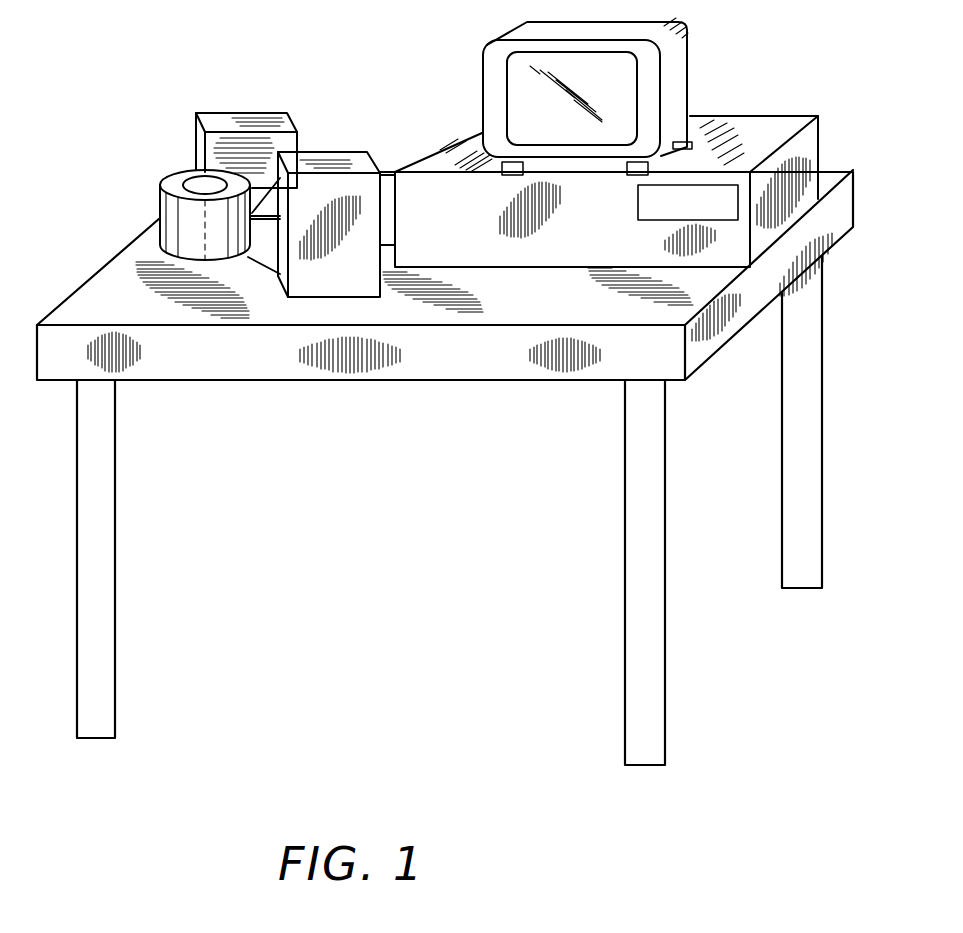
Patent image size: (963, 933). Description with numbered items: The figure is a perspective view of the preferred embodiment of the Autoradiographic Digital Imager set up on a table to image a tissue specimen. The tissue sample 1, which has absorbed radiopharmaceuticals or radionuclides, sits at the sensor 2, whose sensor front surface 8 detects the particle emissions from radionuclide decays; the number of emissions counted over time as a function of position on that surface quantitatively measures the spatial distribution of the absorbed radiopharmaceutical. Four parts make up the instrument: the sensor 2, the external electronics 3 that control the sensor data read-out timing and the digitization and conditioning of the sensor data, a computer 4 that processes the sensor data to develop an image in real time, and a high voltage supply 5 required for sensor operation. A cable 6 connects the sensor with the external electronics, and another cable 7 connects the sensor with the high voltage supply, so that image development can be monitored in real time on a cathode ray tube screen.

The tissue sample 1 is at (197, 183).
The sensor 2 is at (178, 239).
The external electronics 3 is at (350, 150).
The computer 4 is at (745, 117).
The high voltage supply 5 is at (243, 87).
The cable 6 is at (258, 268).
The cable 7 is at (267, 192).
The sensor front surface 8 is at (168, 185).